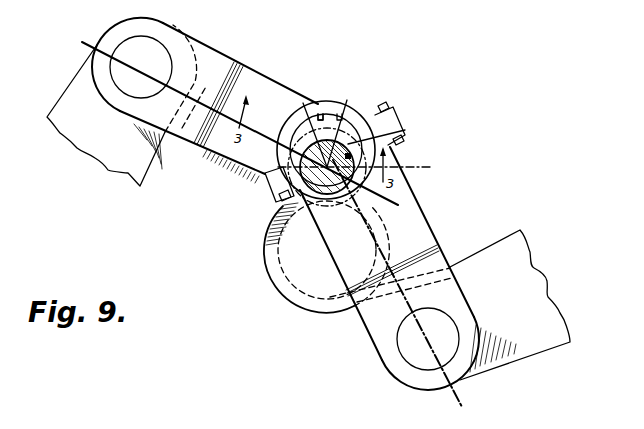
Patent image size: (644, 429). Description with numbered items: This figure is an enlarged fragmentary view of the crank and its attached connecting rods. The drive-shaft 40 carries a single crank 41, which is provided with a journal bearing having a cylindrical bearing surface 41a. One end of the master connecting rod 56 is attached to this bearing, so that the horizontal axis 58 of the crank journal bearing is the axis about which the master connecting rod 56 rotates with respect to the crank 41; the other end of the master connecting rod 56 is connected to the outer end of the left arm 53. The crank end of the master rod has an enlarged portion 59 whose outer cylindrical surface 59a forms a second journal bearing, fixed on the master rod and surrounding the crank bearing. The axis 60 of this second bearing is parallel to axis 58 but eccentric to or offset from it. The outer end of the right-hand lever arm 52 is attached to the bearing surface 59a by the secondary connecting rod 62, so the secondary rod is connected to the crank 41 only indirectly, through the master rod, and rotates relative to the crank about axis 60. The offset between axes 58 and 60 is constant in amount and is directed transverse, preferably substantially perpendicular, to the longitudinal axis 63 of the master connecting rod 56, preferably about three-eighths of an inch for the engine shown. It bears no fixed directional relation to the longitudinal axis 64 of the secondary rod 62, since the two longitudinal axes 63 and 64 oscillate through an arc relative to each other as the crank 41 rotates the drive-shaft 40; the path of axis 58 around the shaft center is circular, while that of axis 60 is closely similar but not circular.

The drive-shaft 40 is at (292, 293).
The crank 41 is at (338, 196).
The cylindrical bearing surface 41a is at (406, 133).
The lever arm 52 is at (537, 308).
The arm 53 is at (105, 166).
The master connecting rod 56 is at (247, 73).
The horizontal axis 58 is at (276, 213).
The enlarged portion 59 is at (339, 116).
The outer cylindrical surface 59a is at (320, 116).
The axis 60 is at (350, 152).
The secondary connecting rod 62 is at (413, 215).
The longitudinal axis 63 is at (206, 149).
The longitudinal axis 64 is at (418, 323).